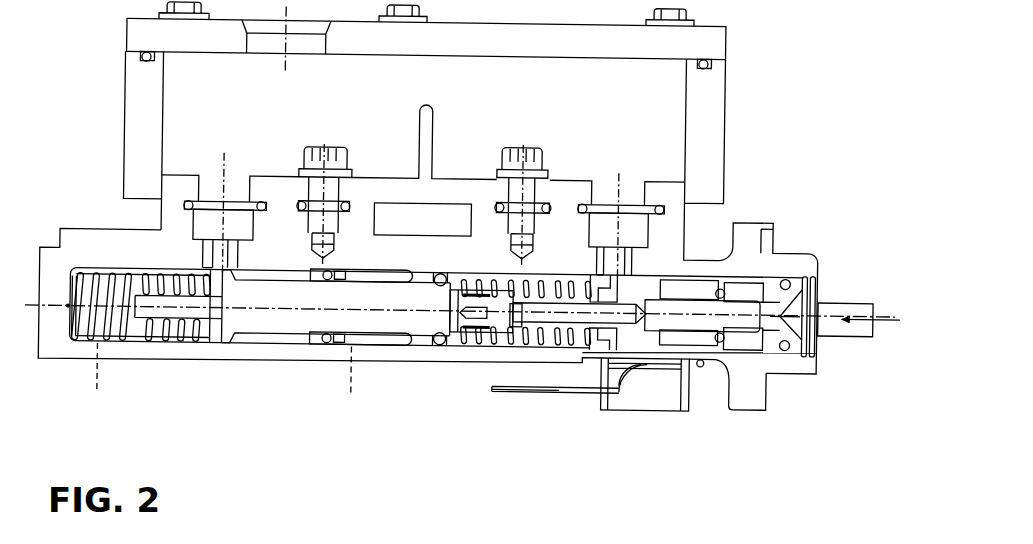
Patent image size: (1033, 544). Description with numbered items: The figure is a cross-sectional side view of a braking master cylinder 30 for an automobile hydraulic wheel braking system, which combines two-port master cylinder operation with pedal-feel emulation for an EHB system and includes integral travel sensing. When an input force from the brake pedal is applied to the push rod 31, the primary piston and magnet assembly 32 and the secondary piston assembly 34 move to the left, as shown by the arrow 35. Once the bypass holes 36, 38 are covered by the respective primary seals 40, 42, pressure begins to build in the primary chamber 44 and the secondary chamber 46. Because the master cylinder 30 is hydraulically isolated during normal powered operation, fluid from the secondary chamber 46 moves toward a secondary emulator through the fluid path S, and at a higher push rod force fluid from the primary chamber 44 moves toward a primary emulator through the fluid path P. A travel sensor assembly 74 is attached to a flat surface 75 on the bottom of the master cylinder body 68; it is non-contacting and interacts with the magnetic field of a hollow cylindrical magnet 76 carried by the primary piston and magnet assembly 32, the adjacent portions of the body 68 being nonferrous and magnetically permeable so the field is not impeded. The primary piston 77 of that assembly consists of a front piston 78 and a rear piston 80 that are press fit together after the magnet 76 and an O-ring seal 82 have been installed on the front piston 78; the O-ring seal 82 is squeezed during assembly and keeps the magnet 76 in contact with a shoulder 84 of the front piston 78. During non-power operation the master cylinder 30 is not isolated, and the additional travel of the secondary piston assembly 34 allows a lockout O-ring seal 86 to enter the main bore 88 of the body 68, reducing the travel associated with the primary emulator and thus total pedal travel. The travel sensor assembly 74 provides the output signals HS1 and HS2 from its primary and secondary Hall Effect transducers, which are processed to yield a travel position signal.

The braking master cylinder 30 is at (774, 80).
The push rod 31 is at (823, 328).
The primary piston and magnet assembly 32 is at (773, 264).
The secondary piston assembly 34 is at (277, 321).
The arrow 35 is at (888, 308).
The bypass hole 36 is at (603, 264).
The bypass hole 38 is at (204, 256).
The primary seal 40 is at (613, 264).
The primary seal 42 is at (220, 259).
The primary chamber 44 is at (502, 273).
The secondary chamber 46 is at (100, 276).
The master cylinder body 68 is at (165, 359).
The travel sensor assembly 74 is at (633, 404).
The flat surface 75 is at (700, 360).
The hollow cylindrical magnet 76 is at (695, 279).
The primary piston 77 is at (736, 286).
The front piston 78 is at (650, 281).
The rear piston 80 is at (739, 331).
The O-ring seal 82 is at (719, 341).
The shoulder 84 is at (652, 334).
The lockout O-ring seal 86 is at (441, 345).
The main bore 88 is at (386, 348).
The fluid path S is at (95, 379).
The fluid path P is at (348, 380).
The output signal HS1 is at (550, 404).
The output signal HS2 is at (517, 379).